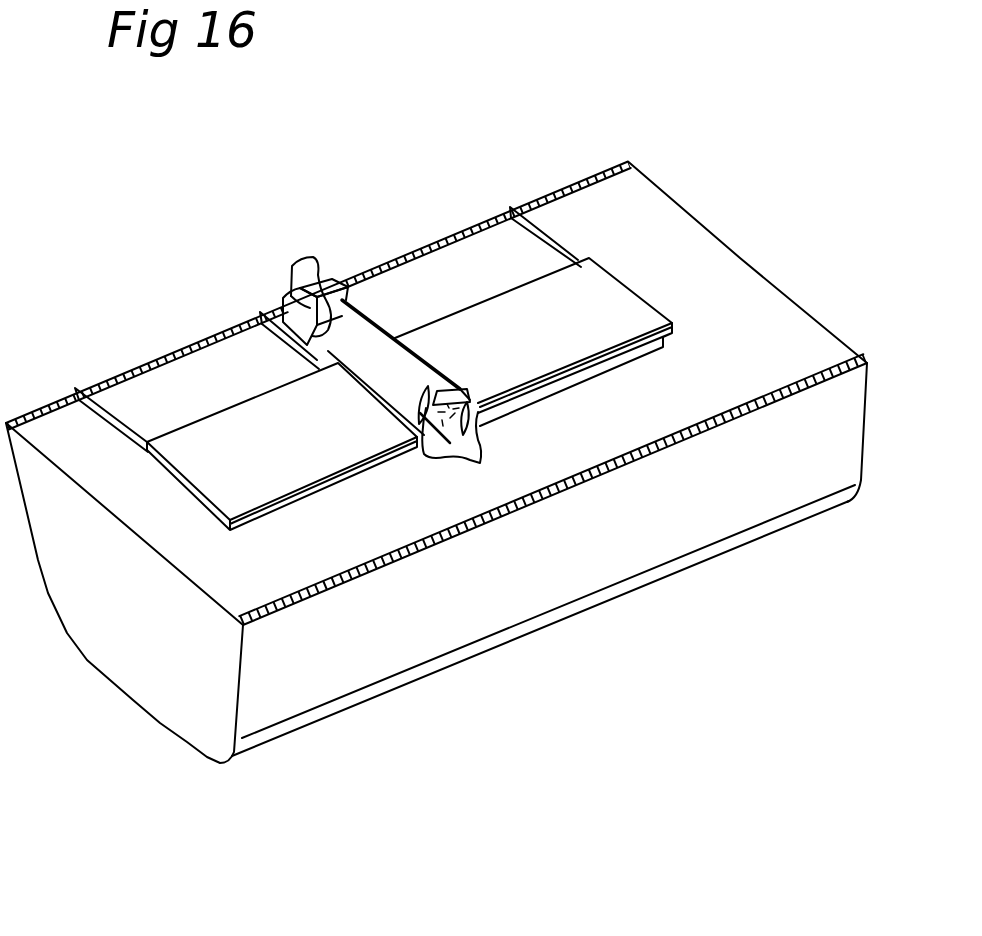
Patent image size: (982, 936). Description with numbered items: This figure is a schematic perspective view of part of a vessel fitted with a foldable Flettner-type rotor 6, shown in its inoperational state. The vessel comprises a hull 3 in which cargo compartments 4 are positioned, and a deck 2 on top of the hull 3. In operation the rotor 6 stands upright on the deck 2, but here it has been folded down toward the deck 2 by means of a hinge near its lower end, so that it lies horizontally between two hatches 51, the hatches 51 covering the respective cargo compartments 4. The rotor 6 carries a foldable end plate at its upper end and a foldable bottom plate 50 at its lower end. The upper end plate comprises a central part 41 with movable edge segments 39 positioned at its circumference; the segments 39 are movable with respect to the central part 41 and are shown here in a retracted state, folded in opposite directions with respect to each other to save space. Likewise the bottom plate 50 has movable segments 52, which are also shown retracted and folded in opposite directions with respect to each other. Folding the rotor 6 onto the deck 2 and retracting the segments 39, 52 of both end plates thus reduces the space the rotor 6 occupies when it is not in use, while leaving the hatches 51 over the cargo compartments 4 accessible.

The deck 2 is at (773, 328).
The hull 3 is at (152, 730).
The cargo compartment 4 is at (185, 413).
The rotor 6 is at (393, 320).
The movable edge segments 39 is at (467, 457).
The central part 41 is at (467, 402).
The bottom plate 50 is at (339, 262).
The hatches 51 is at (620, 318).
The movable segments 52 is at (292, 266).